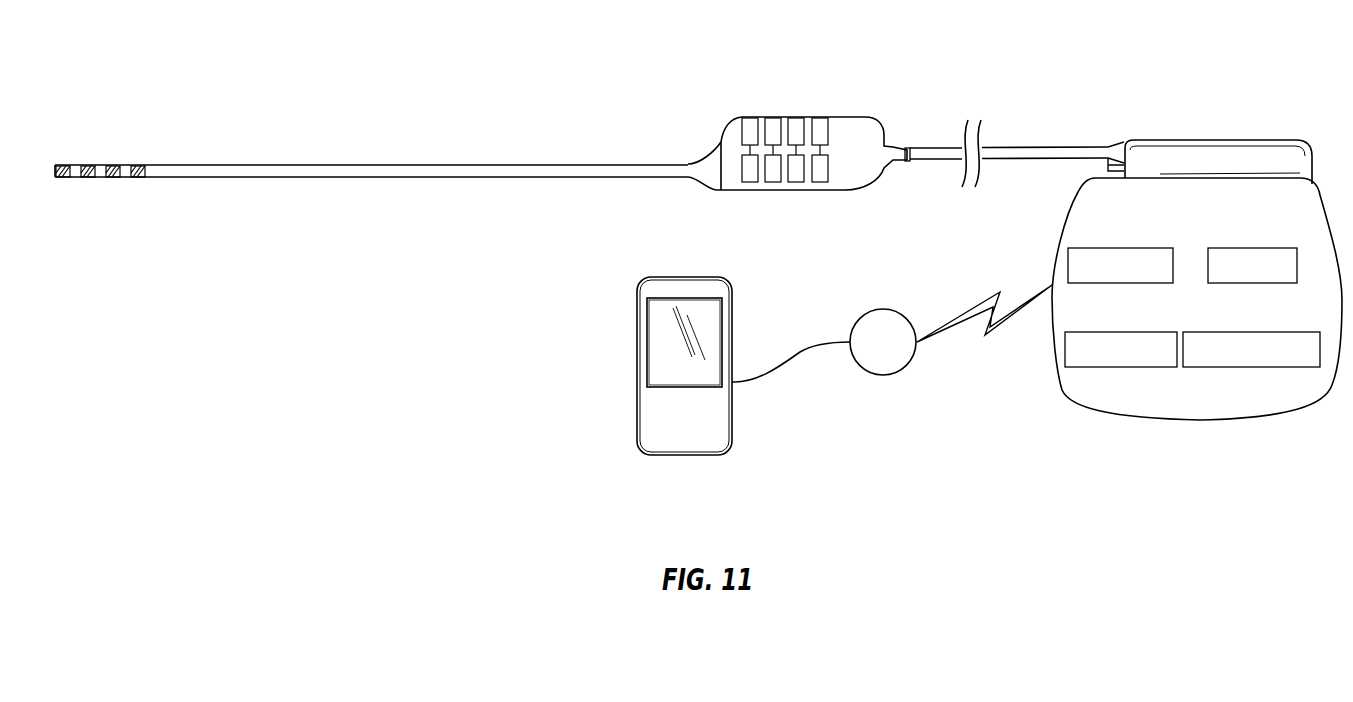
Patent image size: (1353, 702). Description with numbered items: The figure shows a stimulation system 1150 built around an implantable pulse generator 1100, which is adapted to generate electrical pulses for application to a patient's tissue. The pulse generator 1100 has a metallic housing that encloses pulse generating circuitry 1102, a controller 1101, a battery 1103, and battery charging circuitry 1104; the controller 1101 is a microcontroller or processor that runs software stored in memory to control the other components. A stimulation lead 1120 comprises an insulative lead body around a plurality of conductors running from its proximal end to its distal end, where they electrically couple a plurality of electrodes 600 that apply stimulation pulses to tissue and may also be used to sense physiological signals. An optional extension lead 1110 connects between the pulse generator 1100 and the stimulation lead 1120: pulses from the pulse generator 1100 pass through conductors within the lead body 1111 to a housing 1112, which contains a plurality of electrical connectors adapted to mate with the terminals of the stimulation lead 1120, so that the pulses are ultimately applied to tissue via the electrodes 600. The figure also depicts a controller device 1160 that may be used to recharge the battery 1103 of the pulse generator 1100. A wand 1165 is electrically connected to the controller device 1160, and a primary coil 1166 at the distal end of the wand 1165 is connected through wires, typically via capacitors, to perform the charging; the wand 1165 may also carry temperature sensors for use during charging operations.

The electrodes 600 is at (138, 166).
The stimulation lead 1120 is at (324, 147).
The housing 1112 is at (786, 117).
The extension lead 1110 is at (906, 123).
The lead body 1111 is at (1020, 147).
The stimulation system 1150 is at (1243, 39).
The implantable pulse generator 1100 is at (1143, 323).
The controller 1101 is at (1222, 332).
The pulse generating circuitry 1102 is at (1230, 248).
The battery 1103 is at (1100, 248).
The battery charging circuitry 1104 is at (1100, 332).
The controller device 1160 is at (637, 350).
The wand 1165 is at (812, 352).
The coil 1166 is at (885, 376).